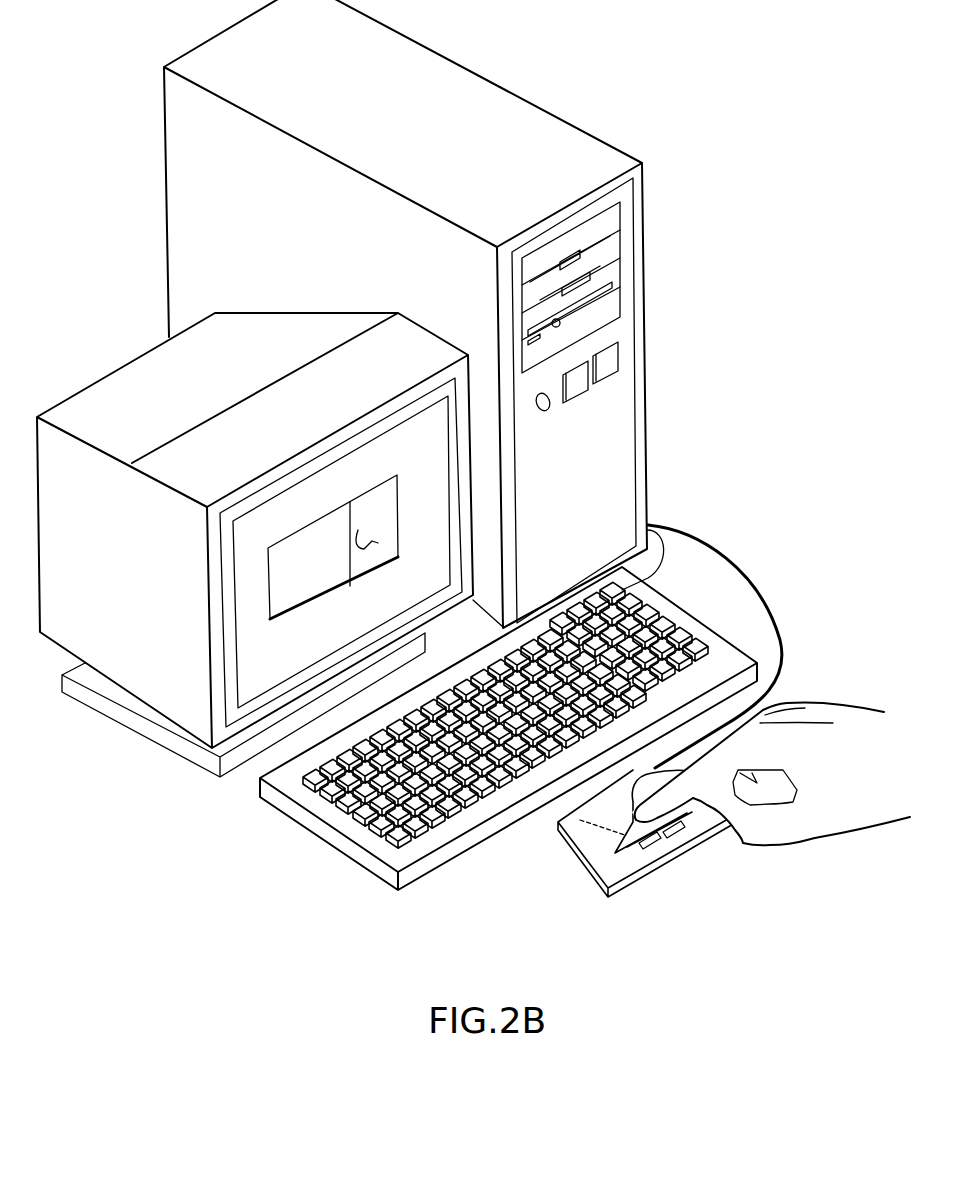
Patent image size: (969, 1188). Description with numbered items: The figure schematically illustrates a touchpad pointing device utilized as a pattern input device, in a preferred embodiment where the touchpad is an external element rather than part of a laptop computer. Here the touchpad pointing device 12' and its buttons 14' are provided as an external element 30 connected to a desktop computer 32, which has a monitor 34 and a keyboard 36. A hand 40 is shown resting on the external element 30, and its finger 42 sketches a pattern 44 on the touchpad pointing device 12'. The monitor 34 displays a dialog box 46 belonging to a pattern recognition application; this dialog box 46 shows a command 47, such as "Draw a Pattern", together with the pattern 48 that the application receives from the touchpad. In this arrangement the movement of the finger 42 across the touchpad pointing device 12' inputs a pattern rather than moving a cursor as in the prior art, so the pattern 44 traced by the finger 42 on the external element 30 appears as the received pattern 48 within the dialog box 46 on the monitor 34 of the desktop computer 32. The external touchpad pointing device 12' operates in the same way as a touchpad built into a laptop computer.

The desktop computer 32 is at (647, 332).
The monitor 34 is at (222, 680).
The keyboard 36 is at (288, 780).
The dialog box 46 is at (370, 490).
The command 47 is at (310, 553).
The pattern 48 is at (367, 548).
The external element 30 is at (556, 822).
The touchpad pointing device 12' is at (573, 872).
The pattern 44 is at (590, 830).
The buttons 14' is at (676, 861).
The finger 42 is at (702, 770).
The hand 40 is at (835, 790).